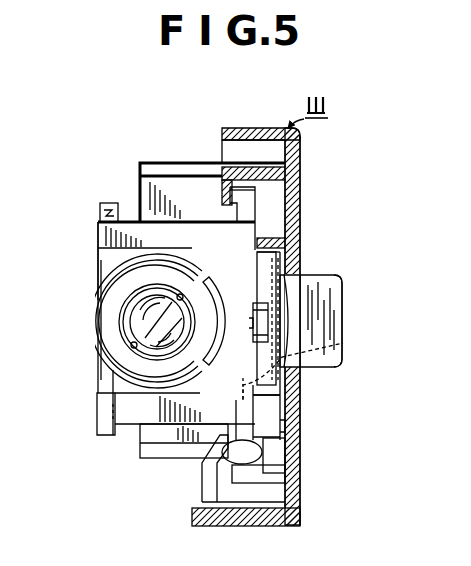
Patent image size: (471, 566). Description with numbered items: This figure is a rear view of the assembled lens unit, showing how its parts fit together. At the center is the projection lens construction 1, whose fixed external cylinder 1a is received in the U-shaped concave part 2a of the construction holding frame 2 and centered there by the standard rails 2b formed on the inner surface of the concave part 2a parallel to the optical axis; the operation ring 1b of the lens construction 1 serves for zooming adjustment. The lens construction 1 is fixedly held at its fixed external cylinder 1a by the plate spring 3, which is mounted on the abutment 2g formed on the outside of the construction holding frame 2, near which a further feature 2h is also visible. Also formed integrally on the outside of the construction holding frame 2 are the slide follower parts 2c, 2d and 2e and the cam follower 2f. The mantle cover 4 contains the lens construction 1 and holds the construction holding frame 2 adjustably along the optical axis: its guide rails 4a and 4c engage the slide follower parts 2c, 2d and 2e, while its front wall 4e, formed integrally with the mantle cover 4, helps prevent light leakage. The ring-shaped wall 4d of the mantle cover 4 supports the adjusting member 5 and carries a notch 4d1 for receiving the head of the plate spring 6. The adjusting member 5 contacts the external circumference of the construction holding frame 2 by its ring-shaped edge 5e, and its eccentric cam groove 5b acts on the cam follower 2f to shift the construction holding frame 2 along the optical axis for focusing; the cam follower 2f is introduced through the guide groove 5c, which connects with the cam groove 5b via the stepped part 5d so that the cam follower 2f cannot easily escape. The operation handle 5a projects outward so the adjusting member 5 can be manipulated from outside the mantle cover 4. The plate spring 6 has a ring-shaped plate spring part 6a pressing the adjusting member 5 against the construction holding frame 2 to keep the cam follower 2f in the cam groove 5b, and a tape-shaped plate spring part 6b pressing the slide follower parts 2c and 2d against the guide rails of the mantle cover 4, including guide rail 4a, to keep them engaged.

The projection lens construction 1 is at (135, 318).
The fixed external cylinder 1a is at (113, 348).
The operation ring 1b is at (108, 278).
The construction holding frame 2 is at (125, 407).
The U-shaped concave part 2a is at (130, 390).
The standard rails 2b is at (206, 270).
The slide follower part 2c is at (284, 492).
The slide follower part 2d is at (248, 454).
The slide follower part 2e is at (256, 210).
The cam follower 2f is at (256, 323).
The abutment 2g is at (100, 209).
The hole 2h is at (109, 418).
The plate spring 3 is at (96, 243).
The mantle cover 4 is at (300, 178).
The guide rail 4a is at (212, 457).
The guide rail 4c is at (222, 162).
The ring-shaped wall 4d is at (280, 240).
The notch 4d1 is at (286, 426).
The front wall 4e is at (148, 198).
The adjusting member 5 is at (289, 294).
The operation handle 5a is at (329, 300).
The eccentric cam groove 5b is at (259, 265).
The guide groove 5c is at (252, 310).
The stepped part 5d is at (237, 399).
The ring-shaped edge 5e is at (257, 251).
The plate spring 6 is at (272, 405).
The ring-shaped plate spring part 6a is at (343, 343).
The tape-shaped plate spring part 6b is at (274, 456).